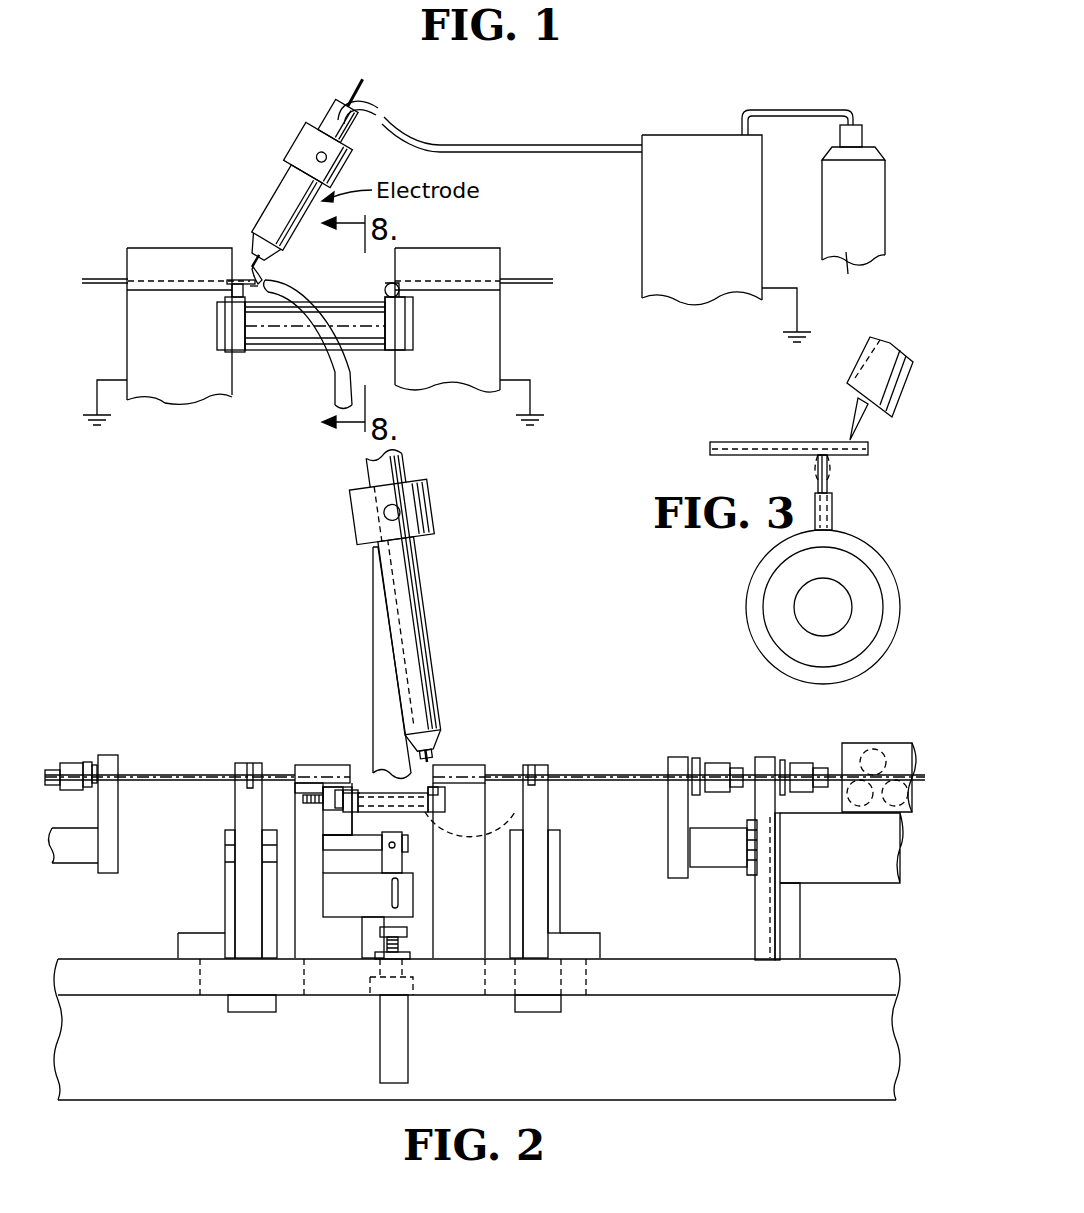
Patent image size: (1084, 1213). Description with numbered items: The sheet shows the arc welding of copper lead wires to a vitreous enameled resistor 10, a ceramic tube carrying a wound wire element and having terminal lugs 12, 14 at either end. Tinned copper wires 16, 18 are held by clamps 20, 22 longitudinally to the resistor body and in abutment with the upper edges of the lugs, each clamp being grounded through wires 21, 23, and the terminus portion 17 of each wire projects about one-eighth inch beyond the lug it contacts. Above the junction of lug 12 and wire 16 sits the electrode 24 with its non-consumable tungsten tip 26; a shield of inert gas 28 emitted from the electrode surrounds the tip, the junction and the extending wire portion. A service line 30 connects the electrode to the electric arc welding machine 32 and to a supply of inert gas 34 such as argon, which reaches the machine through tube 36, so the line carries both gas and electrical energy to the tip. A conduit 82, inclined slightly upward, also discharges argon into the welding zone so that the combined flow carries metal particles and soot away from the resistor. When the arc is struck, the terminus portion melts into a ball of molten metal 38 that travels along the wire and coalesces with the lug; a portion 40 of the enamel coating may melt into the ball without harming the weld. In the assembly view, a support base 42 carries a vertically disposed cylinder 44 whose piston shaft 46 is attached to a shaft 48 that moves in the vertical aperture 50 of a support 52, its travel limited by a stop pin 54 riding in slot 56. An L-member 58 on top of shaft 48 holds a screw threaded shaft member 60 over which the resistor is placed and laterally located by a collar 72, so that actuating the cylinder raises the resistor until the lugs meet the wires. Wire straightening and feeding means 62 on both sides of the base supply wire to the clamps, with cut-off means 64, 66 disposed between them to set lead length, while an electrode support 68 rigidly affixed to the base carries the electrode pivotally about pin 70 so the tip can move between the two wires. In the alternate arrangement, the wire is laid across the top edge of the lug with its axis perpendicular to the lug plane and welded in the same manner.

In FIG. 1, the resistor 10 is at (293, 335).
In FIG. 3, the resistor 10 is at (768, 592).
In FIG. 2, the resistor 10 is at (395, 800).
In FIG. 1, the terminal lug 12 is at (232, 300).
In FIG. 3, the terminal lug 12 is at (828, 478).
In FIG. 2, the terminal lug 12 is at (338, 787).
In FIG. 1, the terminal lug 14 is at (387, 287).
In FIG. 2, the terminal lug 14 is at (442, 790).
In FIG. 1, the wire lead 16 is at (98, 280).
In FIG. 3, the wire lead 16 is at (742, 442).
In FIG. 2, the wire lead 16 is at (158, 774).
In FIG. 1, the terminus portion 17 is at (253, 293).
In FIG. 3, the terminus portion 17 is at (860, 455).
In FIG. 2, the terminus portion 17 is at (415, 793).
In FIG. 1, the wire lead 18 is at (528, 278).
In FIG. 2, the wire lead 18 is at (640, 774).
In FIG. 1, the clamp 20 is at (127, 334).
In FIG. 2, the clamp 20 is at (300, 822).
In FIG. 1, the ground wire 21 is at (97, 400).
In FIG. 1, the clamp 22 is at (455, 372).
In FIG. 2, the clamp 22 is at (470, 790).
In FIG. 1, the ground wire 23 is at (535, 403).
In FIG. 1, the electrode 24 is at (290, 180).
In FIG. 3, the electrode 24 is at (850, 372).
In FIG. 2, the electrode 24 is at (434, 628).
In FIG. 1, the tungsten tip 26 is at (249, 262).
In FIG. 3, the tungsten tip 26 is at (855, 413).
In FIG. 2, the tungsten tip 26 is at (432, 752).
In FIG. 1, the inert gas shield 28 is at (268, 276).
In FIG. 1, the service line 30 is at (507, 145).
In FIG. 1, the electric arc welding machine 32 is at (655, 176).
In FIG. 1, the supply of inert gas 34 is at (875, 185).
In FIG. 1, the tube 36 is at (792, 110).
In FIG. 3, the ball of molten metal 38 is at (816, 465).
In FIG. 3, the portion of vitreous enamel coating 40 is at (834, 510).
In FIG. 2, the support base 42 is at (110, 958).
In FIG. 2, the cylinder 44 is at (385, 1032).
In FIG. 2, the shaft 46 is at (400, 950).
In FIG. 2, the shaft 48 is at (400, 815).
In FIG. 2, the vertical aperture 50 is at (405, 862).
In FIG. 2, the support 52 is at (364, 904).
In FIG. 2, the stop pin 54 is at (399, 890).
In FIG. 2, the slot 56 is at (399, 903).
In FIG. 2, the L-member 58 is at (365, 848).
In FIG. 2, the screw threaded shaft member 60 is at (300, 797).
In FIG. 2, the wire straightening and feeding means 62 is at (72, 745).
In FIG. 2, the cut-off means 64 is at (240, 762).
In FIG. 2, the cut-off means 66 is at (545, 764).
In FIG. 2, the electrode support 68 is at (378, 632).
In FIG. 2, the pin 70 is at (400, 512).
In FIG. 2, the collar 72 is at (312, 794).
In FIG. 1, the conduit 82 is at (333, 375).